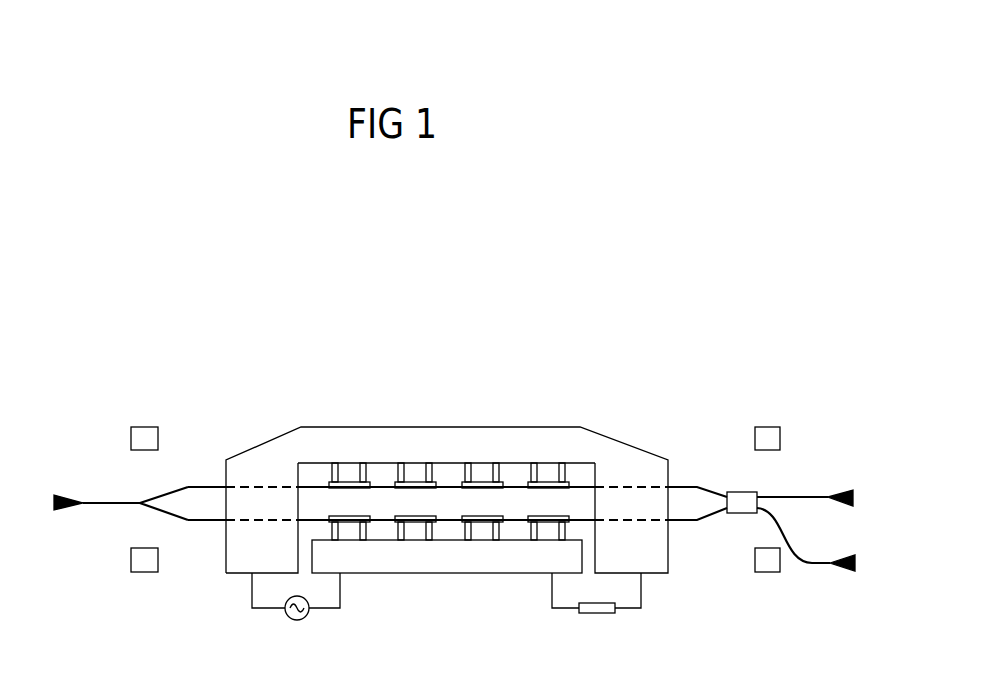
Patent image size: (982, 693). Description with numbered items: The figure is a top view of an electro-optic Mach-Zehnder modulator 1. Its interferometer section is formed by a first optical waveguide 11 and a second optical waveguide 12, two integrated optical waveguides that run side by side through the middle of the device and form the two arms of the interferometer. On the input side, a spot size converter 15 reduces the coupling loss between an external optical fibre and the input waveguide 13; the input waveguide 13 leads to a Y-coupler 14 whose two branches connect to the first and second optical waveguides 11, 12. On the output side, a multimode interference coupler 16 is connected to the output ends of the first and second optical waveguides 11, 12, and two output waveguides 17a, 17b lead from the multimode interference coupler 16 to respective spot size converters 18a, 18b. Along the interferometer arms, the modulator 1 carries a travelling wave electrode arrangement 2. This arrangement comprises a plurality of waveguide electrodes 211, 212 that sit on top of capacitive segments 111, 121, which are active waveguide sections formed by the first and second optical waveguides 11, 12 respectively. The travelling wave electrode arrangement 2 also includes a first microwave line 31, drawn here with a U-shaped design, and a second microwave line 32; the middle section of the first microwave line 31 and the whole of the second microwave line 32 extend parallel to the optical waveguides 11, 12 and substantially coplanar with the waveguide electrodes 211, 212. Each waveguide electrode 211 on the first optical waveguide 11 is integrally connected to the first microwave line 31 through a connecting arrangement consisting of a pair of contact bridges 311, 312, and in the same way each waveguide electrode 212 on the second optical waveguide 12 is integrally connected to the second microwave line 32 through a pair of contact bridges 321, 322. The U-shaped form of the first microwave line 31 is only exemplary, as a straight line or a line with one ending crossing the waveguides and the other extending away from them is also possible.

The Mach-Zehnder modulator 1 is at (302, 323).
The travelling wave electrode arrangement 2 is at (508, 415).
The first optical waveguide 11 is at (316, 484).
The second optical waveguide 12 is at (307, 521).
The input waveguide 13 is at (117, 502).
The Y-coupler 14 is at (182, 487).
The spot size converter 15 is at (58, 512).
The multimode interference coupler 16 is at (740, 497).
The output waveguide 17a is at (812, 495).
The output waveguide 17b is at (812, 567).
The spot size converter 18a is at (855, 493).
The spot size converter 18b is at (848, 572).
The first microwave line 31 is at (460, 435).
The second microwave line 32 is at (480, 563).
The capacitive segment 111 is at (333, 482).
The capacitive segment 121 is at (332, 523).
The waveguide electrode 211 is at (368, 482).
The waveguide electrode 212 is at (357, 535).
The contact bridge 311 is at (336, 478).
The contact bridge 312 is at (363, 480).
The contact bridge 321 is at (337, 533).
The contact bridge 322 is at (366, 535).